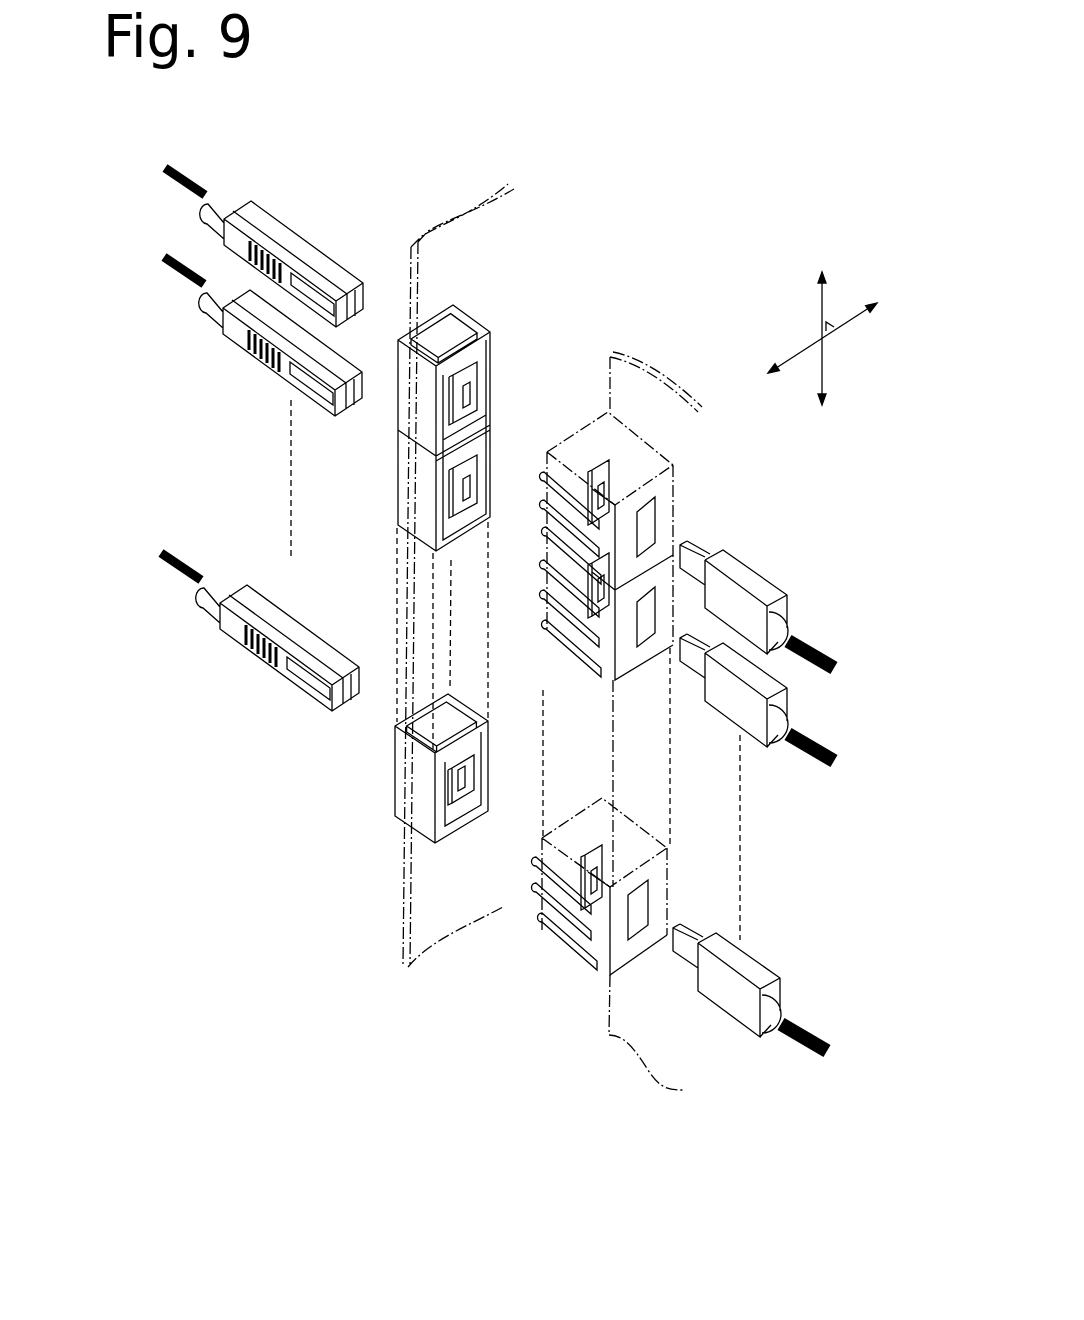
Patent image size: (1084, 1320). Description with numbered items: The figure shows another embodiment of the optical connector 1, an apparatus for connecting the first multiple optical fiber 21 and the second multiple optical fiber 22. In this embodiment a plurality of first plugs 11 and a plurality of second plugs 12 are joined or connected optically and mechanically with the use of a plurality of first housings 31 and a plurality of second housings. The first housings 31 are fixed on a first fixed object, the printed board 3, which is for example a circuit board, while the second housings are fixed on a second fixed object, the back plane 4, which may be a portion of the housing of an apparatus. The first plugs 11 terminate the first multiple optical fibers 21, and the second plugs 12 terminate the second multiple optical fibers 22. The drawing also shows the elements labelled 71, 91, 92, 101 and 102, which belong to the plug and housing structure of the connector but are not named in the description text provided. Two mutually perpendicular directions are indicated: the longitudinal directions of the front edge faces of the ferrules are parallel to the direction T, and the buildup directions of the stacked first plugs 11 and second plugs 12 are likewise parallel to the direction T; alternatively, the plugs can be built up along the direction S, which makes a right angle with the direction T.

The optical connector 1 is at (626, 254).
The printed board 3 is at (655, 385).
The back plane 4 is at (467, 238).
The first plug 11 is at (752, 580).
The second plug 12 is at (292, 245).
The first multiple optical fiber 21 is at (815, 650).
The second multiple optical fiber 22 is at (177, 258).
The first housing 31 is at (678, 515).
The panel-mounted housing 71 is at (405, 512).
The contact fins 91 is at (610, 470).
The plug opening 92 is at (476, 376).
The contact plate 101 is at (612, 505).
The slot 102 is at (470, 395).
The direction S is at (845, 318).
The direction T is at (825, 368).